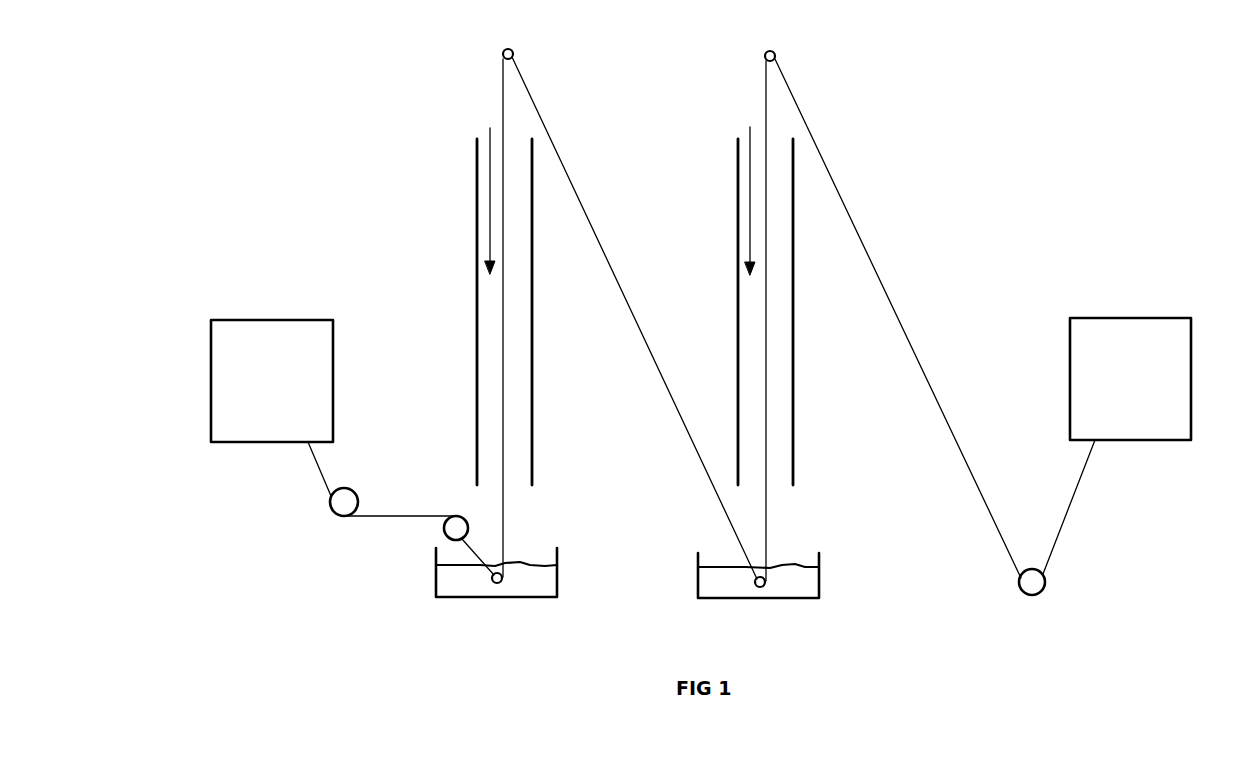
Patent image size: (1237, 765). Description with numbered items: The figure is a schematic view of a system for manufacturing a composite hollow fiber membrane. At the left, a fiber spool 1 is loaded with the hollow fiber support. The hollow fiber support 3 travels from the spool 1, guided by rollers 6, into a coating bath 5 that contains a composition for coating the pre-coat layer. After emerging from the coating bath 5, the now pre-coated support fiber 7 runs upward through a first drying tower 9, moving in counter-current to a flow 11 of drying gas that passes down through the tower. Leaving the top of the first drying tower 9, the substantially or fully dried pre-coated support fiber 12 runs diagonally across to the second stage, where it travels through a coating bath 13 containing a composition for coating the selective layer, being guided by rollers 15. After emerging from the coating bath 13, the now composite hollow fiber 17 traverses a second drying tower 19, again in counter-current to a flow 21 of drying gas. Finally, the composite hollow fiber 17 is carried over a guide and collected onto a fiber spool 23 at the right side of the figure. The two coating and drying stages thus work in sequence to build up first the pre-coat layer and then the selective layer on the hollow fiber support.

The fiber spool 1 is at (268, 340).
The hollow fiber support 3 is at (313, 473).
The coating bath 5 is at (452, 578).
The rollers 6 is at (345, 498).
The pre-coated support fiber 7 is at (503, 525).
The first drying tower 9 is at (477, 188).
The flow of drying gas 11 is at (490, 231).
The dried pre-coated support fiber 12 is at (612, 262).
The coating bath 13 is at (712, 583).
The rollers 15 is at (513, 54).
The composite hollow fiber 17 is at (766, 522).
The second drying tower 19 is at (738, 202).
The flow of drying gas 21 is at (750, 240).
The fiber spool 23 is at (1142, 345).